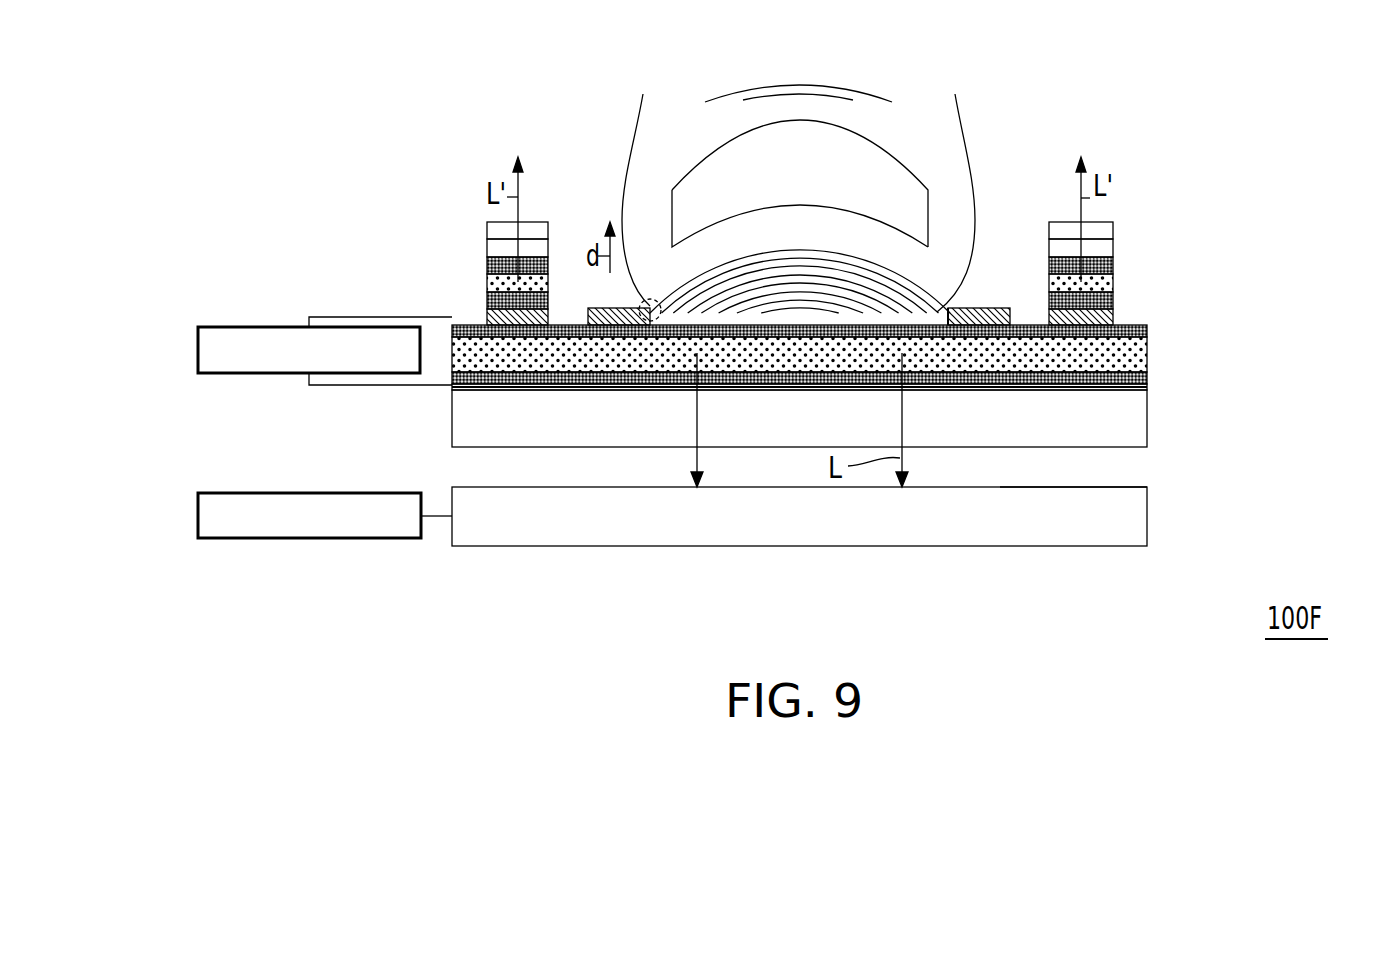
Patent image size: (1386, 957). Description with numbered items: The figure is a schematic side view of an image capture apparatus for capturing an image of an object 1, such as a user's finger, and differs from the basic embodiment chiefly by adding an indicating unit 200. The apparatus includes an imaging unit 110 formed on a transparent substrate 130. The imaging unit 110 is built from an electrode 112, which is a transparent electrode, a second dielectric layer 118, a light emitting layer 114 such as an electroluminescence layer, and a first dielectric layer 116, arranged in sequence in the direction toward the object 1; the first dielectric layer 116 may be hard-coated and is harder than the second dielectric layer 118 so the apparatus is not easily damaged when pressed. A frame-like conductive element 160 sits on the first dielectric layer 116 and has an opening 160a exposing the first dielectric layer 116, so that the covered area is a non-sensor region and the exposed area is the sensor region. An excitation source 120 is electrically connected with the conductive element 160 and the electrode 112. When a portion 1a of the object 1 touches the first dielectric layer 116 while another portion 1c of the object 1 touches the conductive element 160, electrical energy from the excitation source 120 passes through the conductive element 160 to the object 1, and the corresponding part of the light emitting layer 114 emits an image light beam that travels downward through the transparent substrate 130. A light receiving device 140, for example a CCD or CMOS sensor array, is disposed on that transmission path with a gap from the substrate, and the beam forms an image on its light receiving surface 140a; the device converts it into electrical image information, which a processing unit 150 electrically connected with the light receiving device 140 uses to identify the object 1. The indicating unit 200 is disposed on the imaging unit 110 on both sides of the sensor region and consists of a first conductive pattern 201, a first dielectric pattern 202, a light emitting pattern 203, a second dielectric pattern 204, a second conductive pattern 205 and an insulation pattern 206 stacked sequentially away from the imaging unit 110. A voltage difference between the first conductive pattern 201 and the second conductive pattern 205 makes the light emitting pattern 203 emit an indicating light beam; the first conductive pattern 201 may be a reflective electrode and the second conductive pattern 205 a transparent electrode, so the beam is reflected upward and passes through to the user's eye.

The object 1 is at (958, 162).
The portion of the object 1a is at (905, 298).
The another portion of the object 1c is at (650, 299).
The imaging unit 110 is at (866, 357).
The electrode 112 is at (835, 405).
The light emitting layer 114 is at (1135, 355).
The first dielectric layer 116 is at (1145, 331).
The second dielectric layer 118 is at (1135, 379).
The excitation source 120 is at (243, 327).
The transparent substrate 130 is at (1115, 428).
The light receiving device 140 is at (1115, 527).
The light receiving surface 140a is at (1112, 482).
The processing unit 150 is at (243, 493).
The conductive element 160 is at (608, 308).
The opening 160a is at (945, 310).
The indicating unit 200 is at (729, 215).
The first conductive pattern 201 is at (759, 299).
The first dielectric pattern 202 is at (497, 300).
The light emitting pattern 203 is at (497, 284).
The second dielectric pattern 204 is at (497, 266).
The second conductive pattern 205 is at (497, 249).
The insulation pattern 206 is at (497, 232).